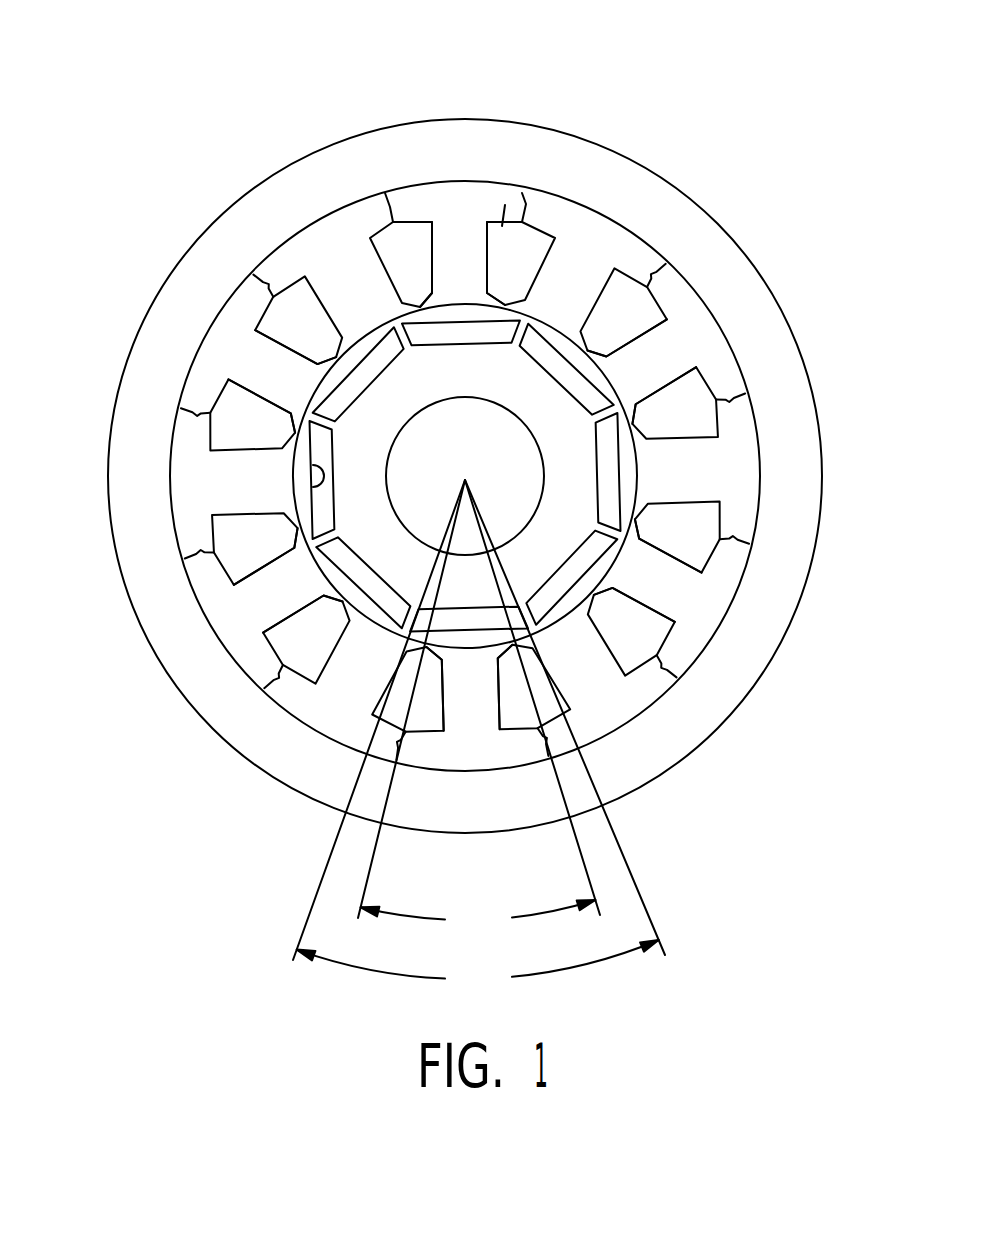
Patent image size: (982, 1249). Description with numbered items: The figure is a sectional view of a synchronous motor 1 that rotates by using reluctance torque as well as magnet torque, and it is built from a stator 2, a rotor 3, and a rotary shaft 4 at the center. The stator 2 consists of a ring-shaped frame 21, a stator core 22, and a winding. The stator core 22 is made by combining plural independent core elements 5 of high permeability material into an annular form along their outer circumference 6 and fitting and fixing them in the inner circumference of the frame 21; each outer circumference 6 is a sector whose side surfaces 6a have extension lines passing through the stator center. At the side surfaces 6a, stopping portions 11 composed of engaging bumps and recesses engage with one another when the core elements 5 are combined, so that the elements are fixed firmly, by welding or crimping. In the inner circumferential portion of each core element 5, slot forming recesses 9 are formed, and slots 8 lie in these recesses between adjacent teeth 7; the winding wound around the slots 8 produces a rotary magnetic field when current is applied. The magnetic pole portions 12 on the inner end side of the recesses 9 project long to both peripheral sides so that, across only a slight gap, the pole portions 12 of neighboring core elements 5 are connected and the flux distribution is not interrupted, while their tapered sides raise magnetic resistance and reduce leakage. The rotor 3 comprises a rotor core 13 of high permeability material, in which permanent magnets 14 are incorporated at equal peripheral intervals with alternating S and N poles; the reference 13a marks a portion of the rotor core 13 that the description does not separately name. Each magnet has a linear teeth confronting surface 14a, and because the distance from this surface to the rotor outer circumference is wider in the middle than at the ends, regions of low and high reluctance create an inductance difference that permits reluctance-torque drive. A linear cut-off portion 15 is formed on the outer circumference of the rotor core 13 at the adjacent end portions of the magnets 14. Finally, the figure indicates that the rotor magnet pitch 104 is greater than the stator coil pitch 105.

The synchronous motor 1 is at (228, 191).
The stator 2 is at (168, 280).
The rotor 3 is at (316, 472).
The rotary shaft 4 is at (474, 469).
The core element 5 is at (413, 62).
The outer circumference 6 is at (450, 203).
The side surfaces 6a is at (385, 193).
The teeth 7 is at (460, 228).
The slots 8 is at (397, 283).
The slot forming recesses 9 is at (502, 226).
The stopping portions 11 is at (375, 219).
The magnetic pole portion 12 is at (436, 226).
The rotor core 13 is at (398, 563).
The rotor core outer portion 13a is at (588, 388).
The permanent magnet 14 is at (390, 352).
The teeth confronting surface 14a is at (292, 505).
The linear cut-off portion 15 is at (400, 322).
The ring-shaped frame 21 is at (687, 212).
The stator core 22 is at (673, 298).
The rotor magnet pitch 104 is at (479, 737).
The stator coil pitch 105 is at (479, 707).